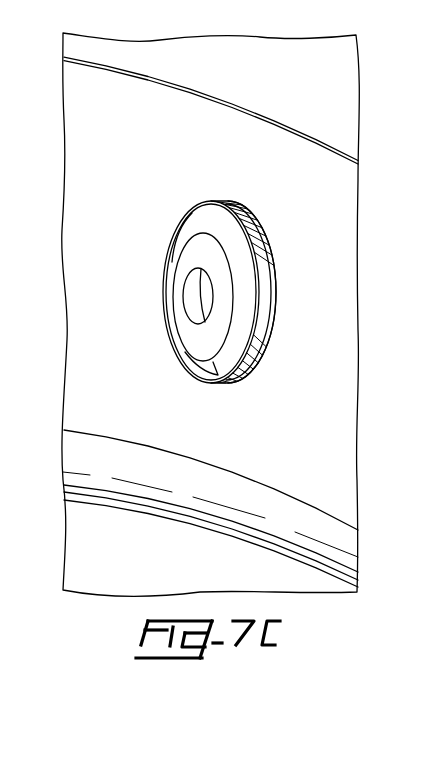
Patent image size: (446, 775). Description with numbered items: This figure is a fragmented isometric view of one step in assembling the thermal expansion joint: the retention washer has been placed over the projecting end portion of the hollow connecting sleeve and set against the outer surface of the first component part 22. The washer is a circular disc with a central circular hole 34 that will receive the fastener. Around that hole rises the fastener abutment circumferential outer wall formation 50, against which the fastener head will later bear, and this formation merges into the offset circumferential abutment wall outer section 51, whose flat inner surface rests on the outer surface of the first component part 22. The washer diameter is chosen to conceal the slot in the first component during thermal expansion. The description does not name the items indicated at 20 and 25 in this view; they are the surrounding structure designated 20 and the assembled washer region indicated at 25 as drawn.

The panel 20 is at (345, 100).
The first component part 22 is at (106, 147).
The fastener insert 25 is at (260, 290).
The central circular hole 34 is at (190, 293).
The fastener abutment circumferential outer wall formation 50 is at (197, 341).
The offset circumferential abutment wall outer section 51 is at (255, 250).